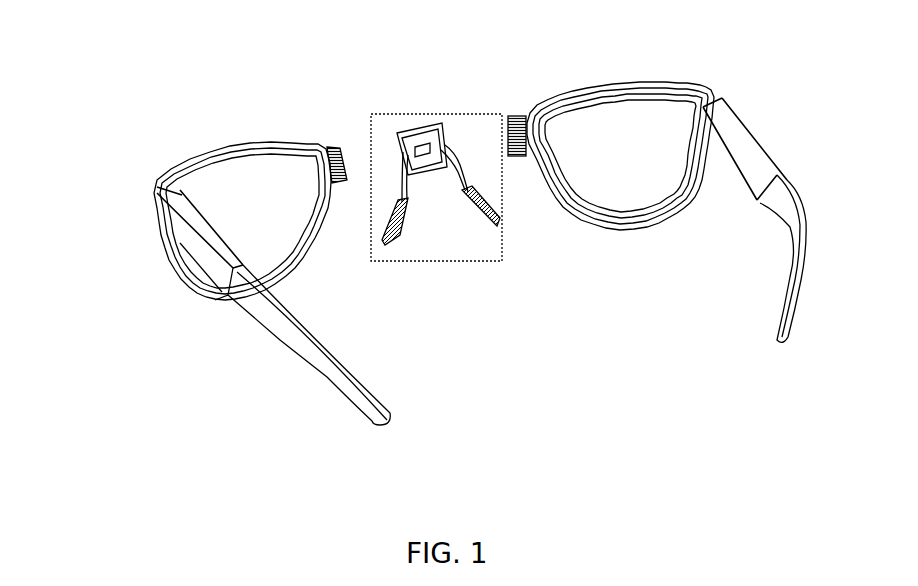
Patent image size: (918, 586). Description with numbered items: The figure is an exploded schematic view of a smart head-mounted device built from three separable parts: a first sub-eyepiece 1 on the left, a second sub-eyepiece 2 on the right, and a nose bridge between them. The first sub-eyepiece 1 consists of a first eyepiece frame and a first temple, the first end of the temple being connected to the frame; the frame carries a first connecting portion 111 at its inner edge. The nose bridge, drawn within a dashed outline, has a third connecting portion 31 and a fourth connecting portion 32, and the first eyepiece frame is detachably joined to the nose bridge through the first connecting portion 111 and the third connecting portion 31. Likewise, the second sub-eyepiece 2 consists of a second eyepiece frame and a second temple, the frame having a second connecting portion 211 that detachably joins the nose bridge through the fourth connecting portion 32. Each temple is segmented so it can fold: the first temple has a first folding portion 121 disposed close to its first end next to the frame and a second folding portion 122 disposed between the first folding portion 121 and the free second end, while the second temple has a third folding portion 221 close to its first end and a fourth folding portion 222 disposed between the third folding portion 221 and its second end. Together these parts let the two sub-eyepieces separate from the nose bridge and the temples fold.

The first sub-eyepiece 1 is at (125, 260).
The first connecting portion 111 is at (330, 150).
The first folding portion 121 is at (158, 196).
The second folding portion 122 is at (230, 300).
The third connecting portion 31 is at (398, 132).
The fourth connecting portion 32 is at (445, 140).
The second sub-eyepiece 2 is at (773, 135).
The second connecting portion 211 is at (515, 114).
The third folding portion 221 is at (718, 105).
The fourth folding portion 222 is at (752, 200).